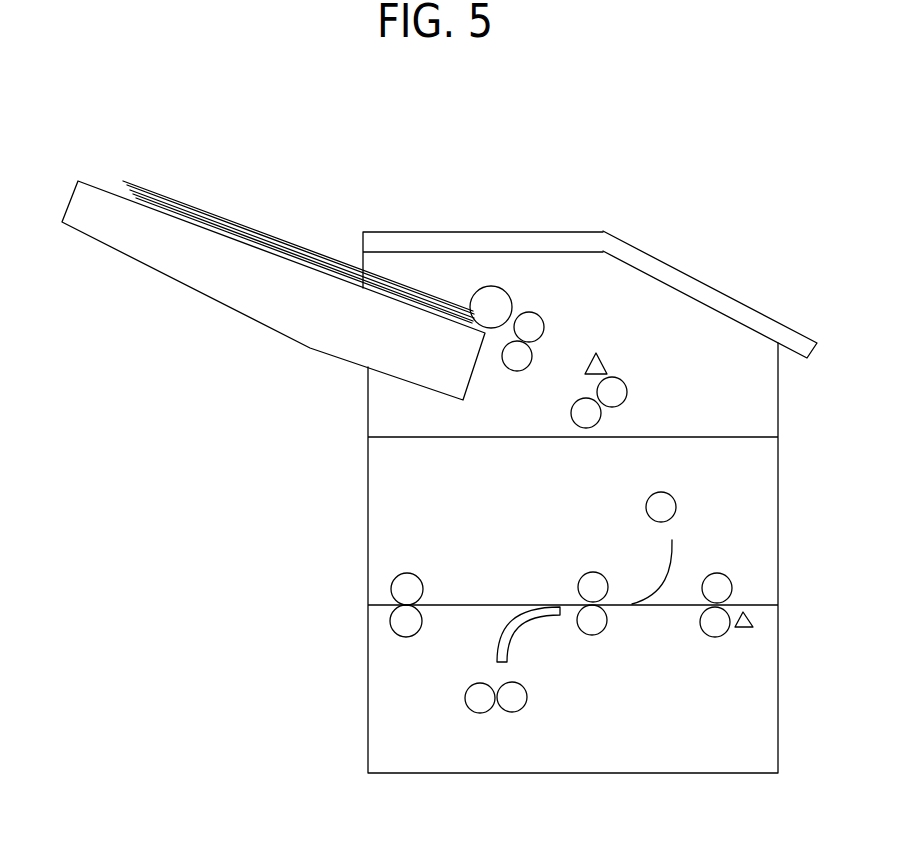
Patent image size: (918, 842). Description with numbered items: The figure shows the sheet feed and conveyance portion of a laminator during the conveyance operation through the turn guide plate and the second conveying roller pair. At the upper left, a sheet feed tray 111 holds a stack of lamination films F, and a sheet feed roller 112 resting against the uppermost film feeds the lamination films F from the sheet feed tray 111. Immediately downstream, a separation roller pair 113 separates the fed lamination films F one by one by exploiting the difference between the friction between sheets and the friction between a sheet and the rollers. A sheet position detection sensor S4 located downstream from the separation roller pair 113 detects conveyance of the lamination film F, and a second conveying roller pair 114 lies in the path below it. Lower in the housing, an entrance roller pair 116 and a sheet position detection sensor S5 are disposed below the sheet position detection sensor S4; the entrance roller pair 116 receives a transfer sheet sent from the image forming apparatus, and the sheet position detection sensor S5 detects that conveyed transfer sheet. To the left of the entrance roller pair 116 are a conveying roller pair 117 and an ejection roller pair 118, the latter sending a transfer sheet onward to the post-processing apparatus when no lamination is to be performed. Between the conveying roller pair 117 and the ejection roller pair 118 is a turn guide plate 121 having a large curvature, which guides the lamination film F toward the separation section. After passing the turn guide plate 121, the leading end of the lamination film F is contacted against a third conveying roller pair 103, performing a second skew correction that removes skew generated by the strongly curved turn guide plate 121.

The sheet feed tray 111 is at (172, 253).
The lamination film F is at (288, 238).
The sheet feed roller 112 is at (489, 305).
The separation roller pair 113 is at (522, 324).
The sheet position detection sensor S4 is at (608, 369).
The second conveying roller pair 114 is at (614, 395).
The ejection roller pair 118 is at (405, 588).
The turn guide plate 121 is at (517, 620).
The conveying roller pair 117 is at (587, 618).
The entrance roller pair 116 is at (710, 617).
The sheet position detection sensor S5 is at (742, 632).
The third conveying roller pair 103 is at (510, 692).